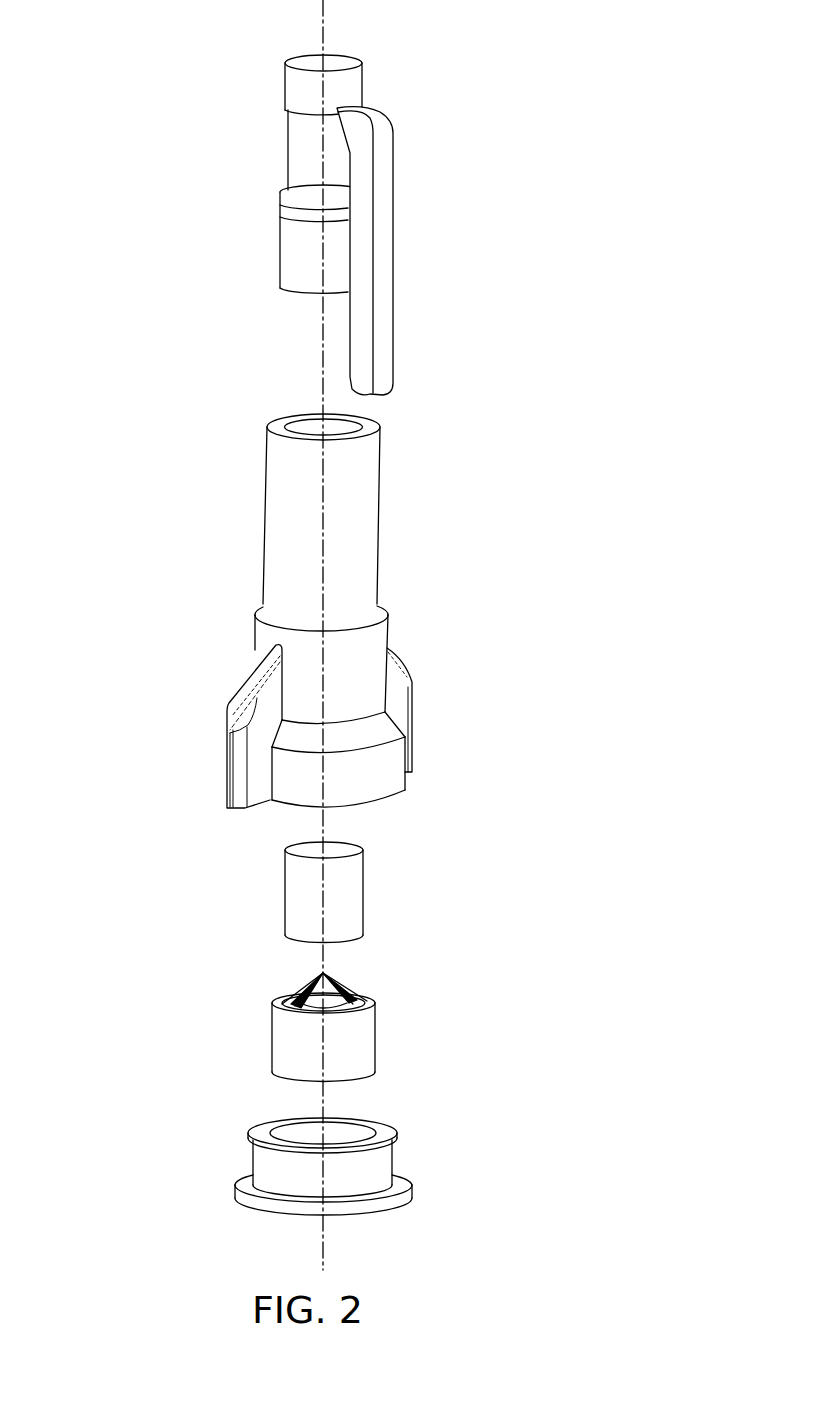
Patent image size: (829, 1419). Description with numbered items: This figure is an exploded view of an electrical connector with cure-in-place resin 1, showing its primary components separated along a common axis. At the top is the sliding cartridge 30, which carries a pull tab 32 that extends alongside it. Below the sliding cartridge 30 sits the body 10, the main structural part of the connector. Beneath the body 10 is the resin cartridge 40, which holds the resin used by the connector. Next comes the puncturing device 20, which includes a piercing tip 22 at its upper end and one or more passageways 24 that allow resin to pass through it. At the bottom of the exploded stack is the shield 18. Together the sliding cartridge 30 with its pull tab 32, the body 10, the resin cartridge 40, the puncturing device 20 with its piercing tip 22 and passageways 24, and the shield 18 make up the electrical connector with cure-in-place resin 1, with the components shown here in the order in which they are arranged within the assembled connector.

The electrical connector with cure-in-place resin 1 is at (110, 100).
The body 10 is at (433, 622).
The shield 18 is at (373, 1173).
The puncturing device 20 is at (325, 1012).
The piercing tip 22 is at (320, 972).
The passageways 24 is at (318, 999).
The sliding cartridge 30 is at (380, 205).
The pull tab 32 is at (383, 250).
The resin cartridge 40 is at (402, 863).